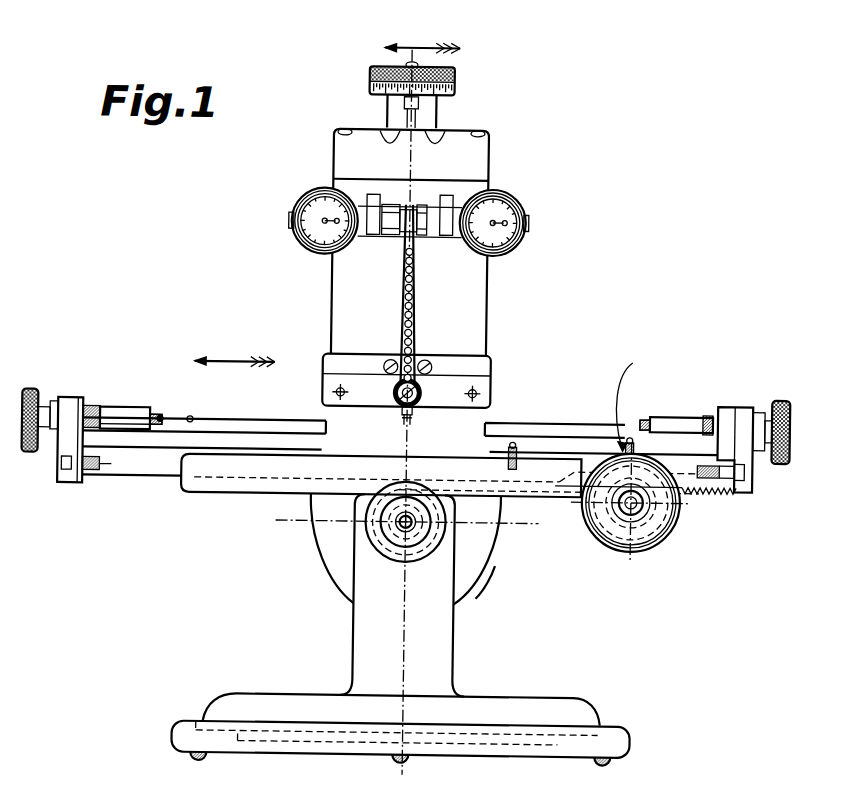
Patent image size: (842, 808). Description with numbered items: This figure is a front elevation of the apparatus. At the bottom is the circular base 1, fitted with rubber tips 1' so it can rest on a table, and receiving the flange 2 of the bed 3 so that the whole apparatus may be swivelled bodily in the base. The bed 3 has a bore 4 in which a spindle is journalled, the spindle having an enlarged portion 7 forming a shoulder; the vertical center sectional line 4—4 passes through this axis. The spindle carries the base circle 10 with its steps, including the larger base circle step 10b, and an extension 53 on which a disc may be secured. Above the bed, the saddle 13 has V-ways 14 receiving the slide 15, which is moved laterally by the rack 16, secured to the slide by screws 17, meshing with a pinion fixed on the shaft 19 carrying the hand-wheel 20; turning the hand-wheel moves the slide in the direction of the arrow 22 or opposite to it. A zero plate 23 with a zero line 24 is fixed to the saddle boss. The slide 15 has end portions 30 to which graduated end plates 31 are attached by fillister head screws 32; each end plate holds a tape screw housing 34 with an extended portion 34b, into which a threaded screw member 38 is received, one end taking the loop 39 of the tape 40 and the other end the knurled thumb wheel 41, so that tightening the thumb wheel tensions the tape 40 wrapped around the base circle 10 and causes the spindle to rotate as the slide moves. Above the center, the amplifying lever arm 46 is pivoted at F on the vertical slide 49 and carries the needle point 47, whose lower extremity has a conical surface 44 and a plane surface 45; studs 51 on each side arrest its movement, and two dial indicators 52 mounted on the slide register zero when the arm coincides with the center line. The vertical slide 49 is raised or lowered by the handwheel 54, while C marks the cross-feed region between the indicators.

The base 1 is at (419, 730).
The rubber tips 1' is at (423, 778).
The flange 2 is at (579, 708).
The bed 3 is at (445, 602).
The bore 4 is at (417, 412).
The enlarged portion 7 is at (371, 531).
The base circle 10 is at (472, 549).
The base circle step 10b is at (497, 563).
The saddle 13 is at (221, 488).
The V-ways 14 is at (146, 474).
The slide 15 is at (585, 398).
The rack 16 is at (696, 486).
The screws 17 is at (513, 444).
The shaft 19 is at (646, 512).
The hand-wheel 20 is at (648, 537).
The arrow 22 is at (234, 351).
The zero plate 23 is at (602, 538).
The zero line 24 is at (636, 397).
The end portions 30 is at (708, 372).
The graduated end plates 31 is at (732, 338).
The fillister head screws 32 is at (108, 416).
The tape screw housing 34 is at (765, 400).
The extended portion 34b is at (125, 434).
The threaded screw member 38 is at (162, 418).
The loop 39 is at (186, 418).
The tape 40 is at (262, 418).
The knurled thumb wheel 41 is at (783, 373).
The conical surface 44 is at (398, 426).
The plane surface 45 is at (400, 428).
The amplifying lever arm 46 is at (412, 330).
The needle point 47 is at (412, 426).
The vertical slide 49 is at (463, 297).
The studs 51 is at (510, 345).
The dial indicators 52 is at (538, 186).
The extension 53 is at (396, 530).
The handwheel 54 is at (450, 80).
The cross feed C is at (409, 203).
The pivot F is at (421, 395).